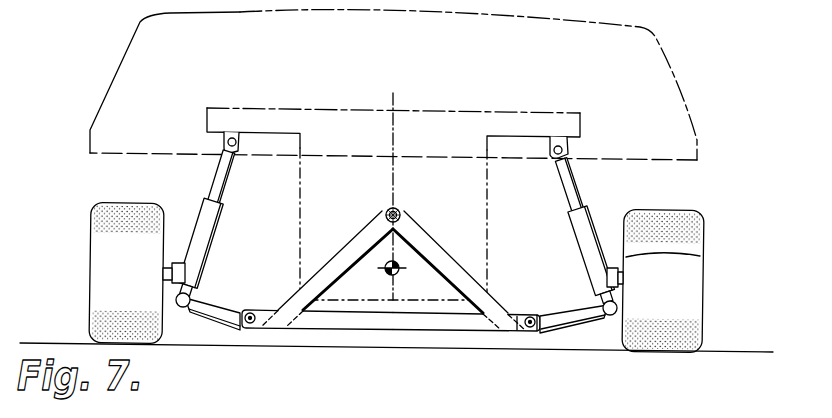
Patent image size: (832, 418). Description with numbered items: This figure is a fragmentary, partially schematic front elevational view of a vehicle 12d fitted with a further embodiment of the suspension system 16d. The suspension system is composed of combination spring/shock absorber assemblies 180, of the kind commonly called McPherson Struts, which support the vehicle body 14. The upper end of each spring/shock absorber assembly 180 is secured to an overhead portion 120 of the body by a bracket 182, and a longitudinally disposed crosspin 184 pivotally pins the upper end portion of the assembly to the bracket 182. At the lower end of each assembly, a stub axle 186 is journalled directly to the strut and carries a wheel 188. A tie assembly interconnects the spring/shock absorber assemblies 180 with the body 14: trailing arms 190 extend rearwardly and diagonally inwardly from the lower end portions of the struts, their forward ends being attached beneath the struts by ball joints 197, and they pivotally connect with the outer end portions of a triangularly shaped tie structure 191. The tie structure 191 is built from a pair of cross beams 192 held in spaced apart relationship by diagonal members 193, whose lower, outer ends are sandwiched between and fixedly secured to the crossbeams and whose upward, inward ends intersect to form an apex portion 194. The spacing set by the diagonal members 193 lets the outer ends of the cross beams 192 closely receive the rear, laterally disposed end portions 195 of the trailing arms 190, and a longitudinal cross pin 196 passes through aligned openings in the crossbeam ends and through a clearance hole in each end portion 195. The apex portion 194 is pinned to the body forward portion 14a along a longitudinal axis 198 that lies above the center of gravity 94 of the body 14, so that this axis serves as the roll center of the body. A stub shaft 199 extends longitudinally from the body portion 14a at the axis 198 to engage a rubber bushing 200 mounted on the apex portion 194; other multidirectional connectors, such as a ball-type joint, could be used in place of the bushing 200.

The vehicle 12d is at (87, 69).
The vehicle body 14 is at (662, 40).
The body forward portion 14a is at (420, 108).
The overhead portion 120 is at (570, 117).
The bracket 182 is at (567, 143).
The crosspin 184 is at (569, 152).
The spring/shock absorber assembly 180 is at (595, 210).
The stub axle 186 is at (700, 256).
The wheel 188 is at (702, 303).
The trailing arm 190 is at (213, 317).
The tie structure 191 is at (373, 333).
The cross beam 192 is at (475, 325).
The diagonal member 193 is at (332, 263).
The apex portion 194 is at (410, 219).
The end portion of trailing arm 195 is at (535, 335).
The cross pin 196 is at (245, 313).
The ball joint 197 is at (183, 289).
The longitudinal axis 198 is at (379, 223).
The stub shaft 199 is at (391, 208).
The rubber bushing 200 is at (385, 211).
The center of gravity 94 is at (385, 272).
The suspension system 16d is at (427, 343).